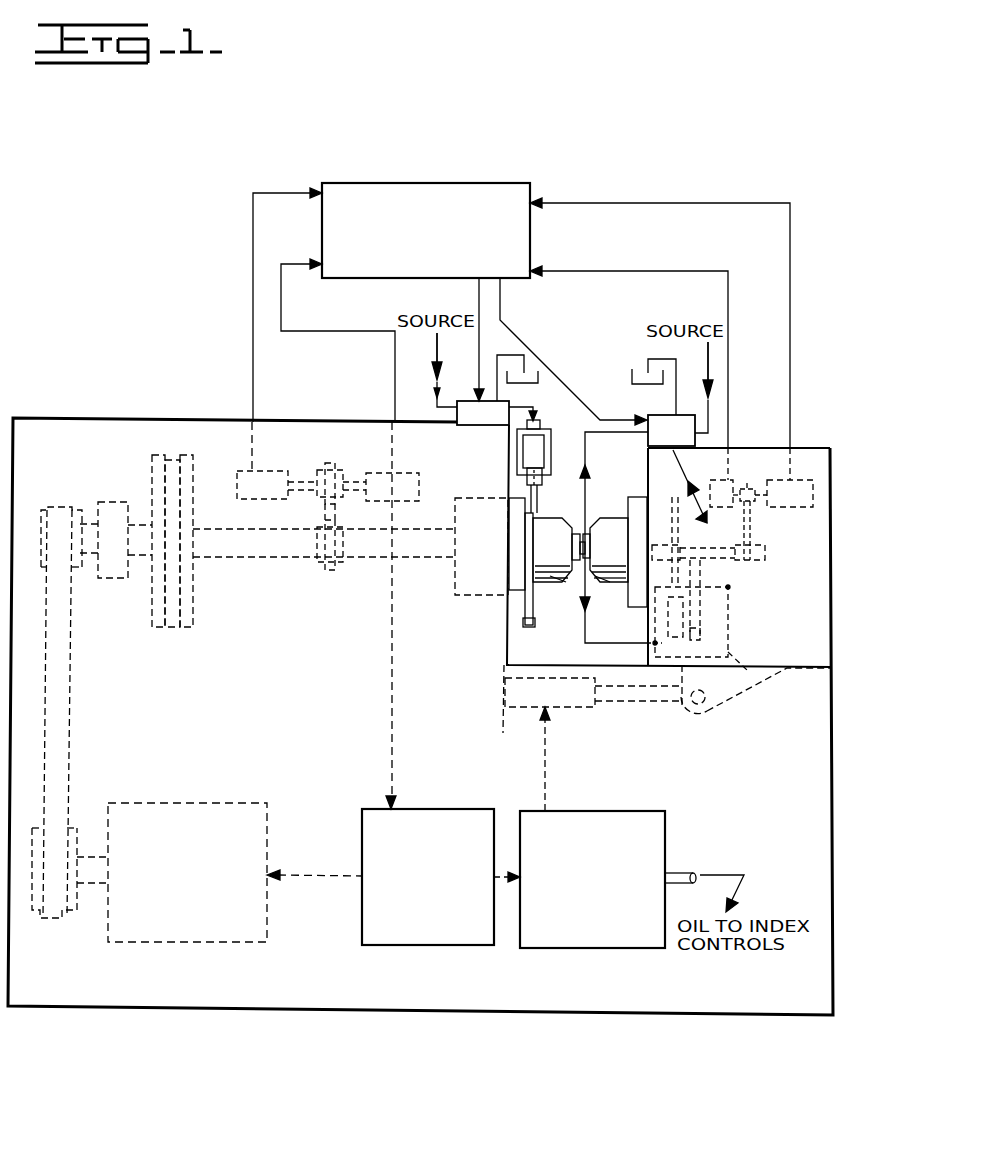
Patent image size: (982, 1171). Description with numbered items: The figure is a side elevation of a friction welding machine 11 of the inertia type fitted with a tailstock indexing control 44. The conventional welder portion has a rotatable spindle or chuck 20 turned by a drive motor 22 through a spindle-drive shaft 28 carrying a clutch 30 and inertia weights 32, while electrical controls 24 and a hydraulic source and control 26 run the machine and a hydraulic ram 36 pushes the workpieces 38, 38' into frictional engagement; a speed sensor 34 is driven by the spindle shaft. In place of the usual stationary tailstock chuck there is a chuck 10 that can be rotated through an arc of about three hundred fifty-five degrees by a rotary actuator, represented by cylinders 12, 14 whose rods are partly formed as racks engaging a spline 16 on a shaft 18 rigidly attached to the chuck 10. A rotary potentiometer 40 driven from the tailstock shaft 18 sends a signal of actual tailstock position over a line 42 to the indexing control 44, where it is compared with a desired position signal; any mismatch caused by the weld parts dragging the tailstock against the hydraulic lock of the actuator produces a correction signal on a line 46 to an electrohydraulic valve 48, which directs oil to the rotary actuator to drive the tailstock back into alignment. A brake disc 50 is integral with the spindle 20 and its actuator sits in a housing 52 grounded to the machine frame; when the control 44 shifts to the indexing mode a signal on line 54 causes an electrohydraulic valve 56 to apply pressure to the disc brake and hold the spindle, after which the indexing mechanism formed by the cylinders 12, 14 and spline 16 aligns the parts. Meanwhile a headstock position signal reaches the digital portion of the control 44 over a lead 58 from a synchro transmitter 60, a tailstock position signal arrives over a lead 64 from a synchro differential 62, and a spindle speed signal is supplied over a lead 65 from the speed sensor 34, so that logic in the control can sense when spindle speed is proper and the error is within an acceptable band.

The chuck 10 is at (619, 519).
The friction welding machine 11 is at (174, 198).
The cylinder 12 is at (654, 642).
The cylinder 14 is at (700, 613).
The spline 16 is at (729, 588).
The shaft 18 is at (722, 562).
The spindle 20 is at (542, 519).
The drive motor 22 is at (174, 803).
The electrical controls 24 is at (455, 812).
The hydraulic source and control 26 is at (622, 812).
The spindle-drive shaft 28 is at (275, 550).
The clutch 30 is at (118, 574).
The inertia weights 32 is at (174, 627).
The speed sensor 34 is at (375, 470).
The hydraulic ram 36 is at (555, 706).
The workpiece 38 is at (561, 591).
The workpiece 38' is at (612, 593).
The rotary potentiometer 40 is at (718, 478).
The line 42 is at (628, 270).
The tailstock indexing control 44 is at (408, 190).
The line 46 is at (521, 343).
The electrohydraulic valve 48 is at (663, 413).
The brake disc 50 is at (535, 494).
The housing 52 is at (537, 440).
The line 54 is at (479, 289).
The electrohydraulic valve 56 is at (466, 399).
The lead 58 is at (252, 267).
The synchro transmitter 60 is at (262, 493).
The synchro differential 62 is at (800, 507).
The lead 64 is at (644, 201).
The lead 65 is at (343, 333).